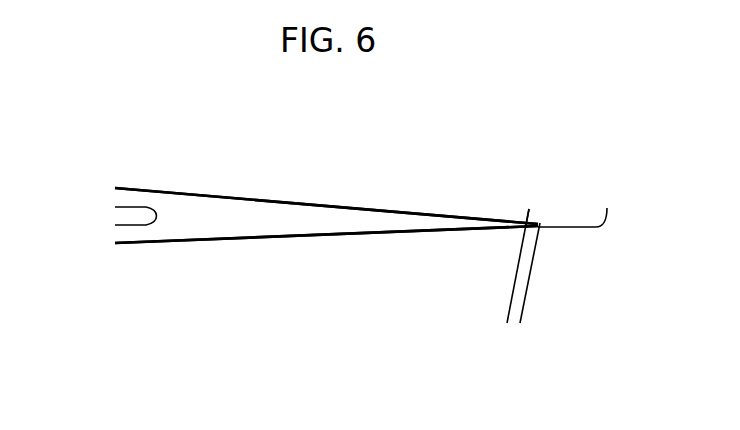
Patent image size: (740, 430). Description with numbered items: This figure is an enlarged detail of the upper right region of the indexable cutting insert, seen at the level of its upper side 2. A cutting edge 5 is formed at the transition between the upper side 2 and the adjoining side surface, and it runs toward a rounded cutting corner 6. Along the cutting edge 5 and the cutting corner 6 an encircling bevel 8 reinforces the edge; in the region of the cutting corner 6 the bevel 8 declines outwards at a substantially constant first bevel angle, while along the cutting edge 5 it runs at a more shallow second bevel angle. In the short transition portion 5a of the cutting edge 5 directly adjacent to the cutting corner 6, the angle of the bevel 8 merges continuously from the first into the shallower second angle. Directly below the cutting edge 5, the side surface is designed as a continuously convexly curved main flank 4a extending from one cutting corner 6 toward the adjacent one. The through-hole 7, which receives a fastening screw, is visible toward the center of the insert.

The upper side 2 is at (252, 217).
The cutting edge 5 is at (348, 198).
The through-hole 7 is at (130, 213).
The transition portion 5a is at (505, 228).
The bevel 8 is at (533, 207).
The cutting corner 6 is at (582, 211).
The main flank 4a is at (375, 290).